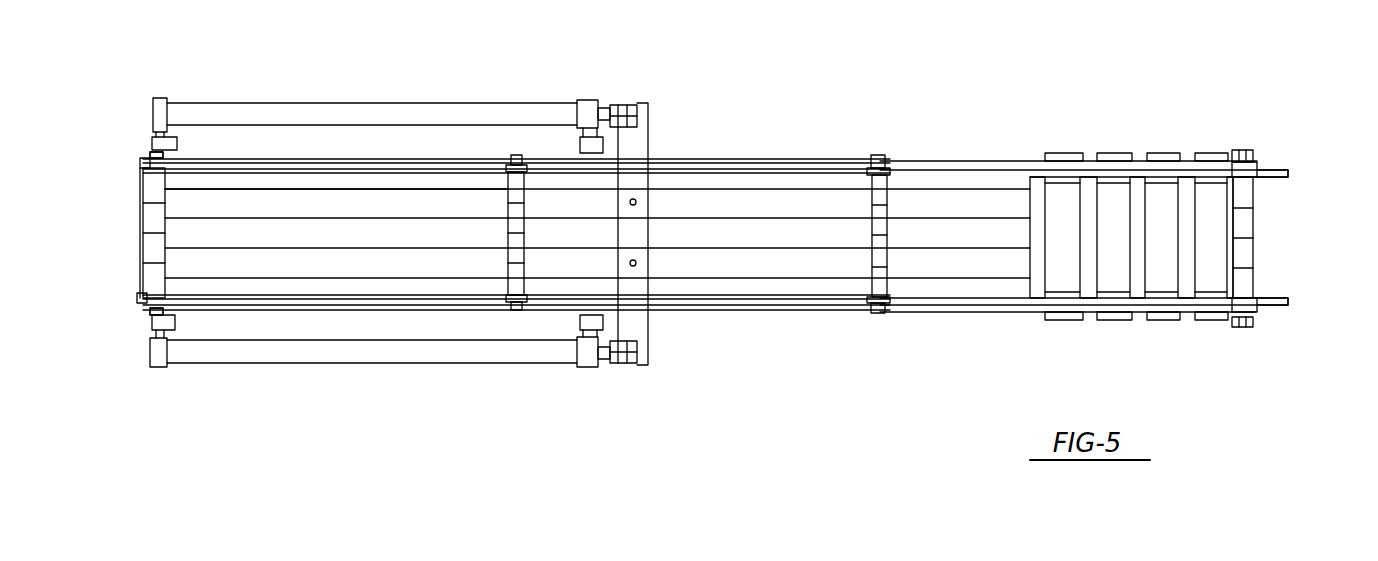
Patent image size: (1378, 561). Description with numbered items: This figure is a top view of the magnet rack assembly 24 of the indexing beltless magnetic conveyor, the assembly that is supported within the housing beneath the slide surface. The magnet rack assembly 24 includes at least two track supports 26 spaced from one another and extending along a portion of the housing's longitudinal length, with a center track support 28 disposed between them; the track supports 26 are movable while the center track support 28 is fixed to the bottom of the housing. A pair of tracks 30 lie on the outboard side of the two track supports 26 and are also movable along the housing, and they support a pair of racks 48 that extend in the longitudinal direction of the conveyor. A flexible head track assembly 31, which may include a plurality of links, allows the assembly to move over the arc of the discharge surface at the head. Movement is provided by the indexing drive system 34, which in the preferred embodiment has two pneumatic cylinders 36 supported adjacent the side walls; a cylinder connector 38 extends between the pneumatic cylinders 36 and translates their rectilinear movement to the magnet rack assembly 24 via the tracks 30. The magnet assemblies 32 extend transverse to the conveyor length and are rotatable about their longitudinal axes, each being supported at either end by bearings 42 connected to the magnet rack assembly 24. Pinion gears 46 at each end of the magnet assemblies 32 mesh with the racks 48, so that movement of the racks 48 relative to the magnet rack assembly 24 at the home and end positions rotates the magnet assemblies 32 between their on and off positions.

The magnet rack assembly 24 is at (770, 147).
The track supports 26 is at (812, 189).
The center track support 28 is at (352, 195).
The tracks 30 is at (985, 161).
The flexible head track assembly 31 is at (1140, 161).
The magnet assemblies 32 is at (141, 236).
The indexing drive system 34 is at (466, 100).
The pneumatic cylinders 36 is at (313, 103).
The cylinder connector 38 is at (646, 145).
The bearings 42 is at (172, 150).
The pinion gears 46 is at (147, 158).
The racks 48 is at (1286, 170).